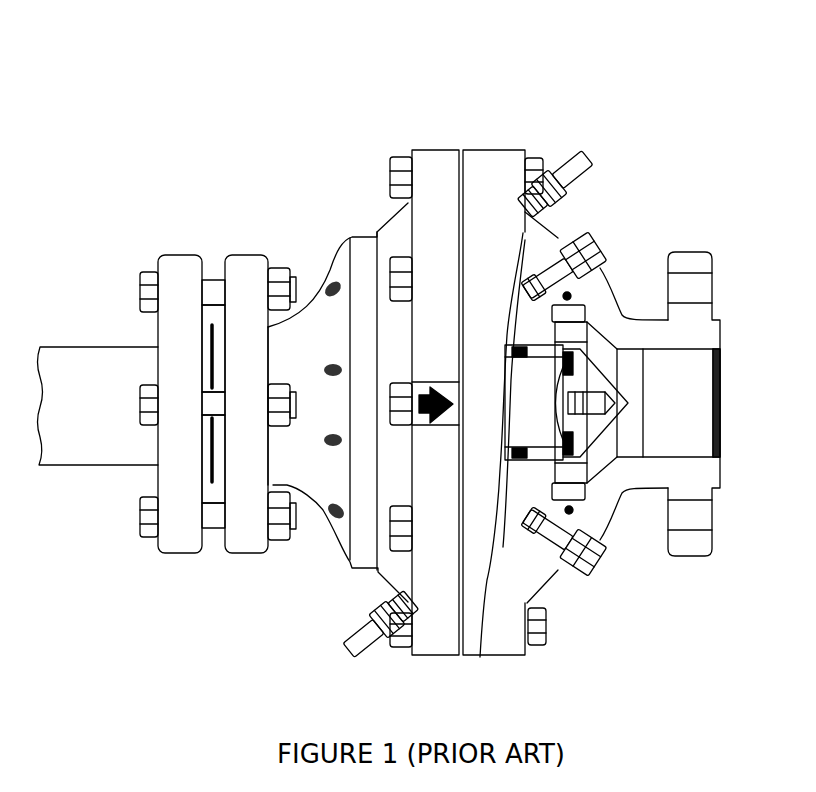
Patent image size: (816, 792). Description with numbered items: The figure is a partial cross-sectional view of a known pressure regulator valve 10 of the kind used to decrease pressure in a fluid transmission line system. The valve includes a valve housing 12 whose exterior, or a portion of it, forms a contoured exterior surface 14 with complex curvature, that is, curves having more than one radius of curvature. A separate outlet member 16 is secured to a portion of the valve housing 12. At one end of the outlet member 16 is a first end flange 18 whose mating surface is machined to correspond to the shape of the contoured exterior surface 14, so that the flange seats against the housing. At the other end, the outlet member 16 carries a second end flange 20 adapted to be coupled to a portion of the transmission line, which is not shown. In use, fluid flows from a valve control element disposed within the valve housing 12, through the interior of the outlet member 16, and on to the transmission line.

The pressure regulator valve 10 is at (582, 33).
The valve housing 12 is at (491, 172).
The contoured exterior surface 14 is at (558, 572).
The outlet member 16 is at (627, 310).
The first end flange 18 is at (576, 232).
The second end flange 20 is at (690, 258).